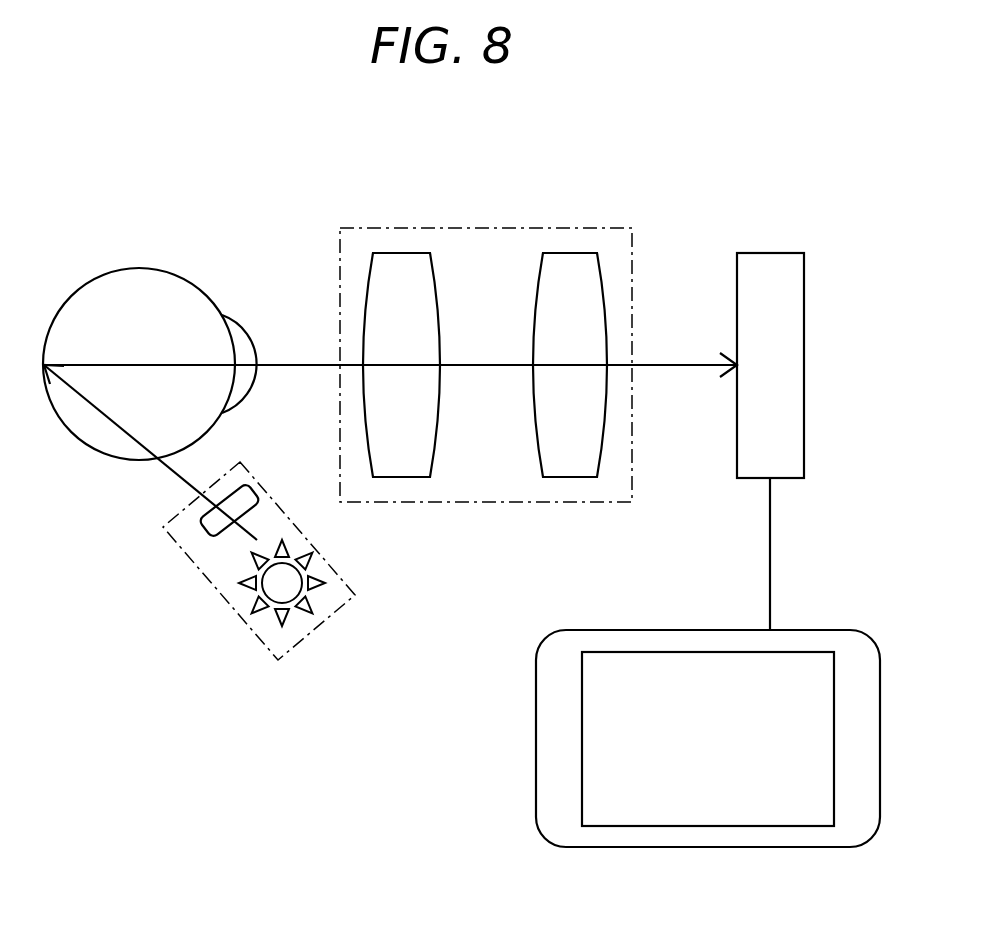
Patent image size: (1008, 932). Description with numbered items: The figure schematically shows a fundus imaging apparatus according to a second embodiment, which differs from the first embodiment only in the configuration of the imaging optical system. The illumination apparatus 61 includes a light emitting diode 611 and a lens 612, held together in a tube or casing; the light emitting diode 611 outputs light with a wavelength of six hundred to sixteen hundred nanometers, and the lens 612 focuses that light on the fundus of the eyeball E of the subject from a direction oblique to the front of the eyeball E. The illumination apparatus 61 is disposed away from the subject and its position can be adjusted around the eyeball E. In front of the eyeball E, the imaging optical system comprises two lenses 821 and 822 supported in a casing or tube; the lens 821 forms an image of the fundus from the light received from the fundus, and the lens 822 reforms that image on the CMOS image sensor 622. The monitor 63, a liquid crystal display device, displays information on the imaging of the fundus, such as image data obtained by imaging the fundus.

The eyeball E is at (181, 277).
The illumination apparatus 61 is at (270, 653).
The light emitting diode (LED) 611 is at (252, 612).
The lens 612 is at (205, 538).
The lens 821 is at (410, 253).
The lens 822 is at (566, 253).
The CMOS image sensor 622 is at (770, 253).
The monitor 63 is at (838, 630).